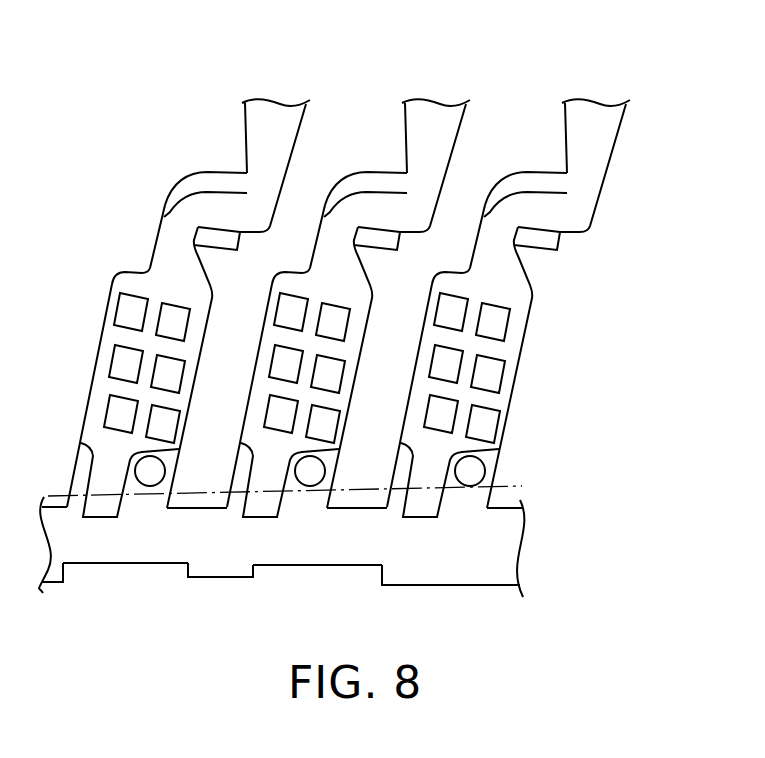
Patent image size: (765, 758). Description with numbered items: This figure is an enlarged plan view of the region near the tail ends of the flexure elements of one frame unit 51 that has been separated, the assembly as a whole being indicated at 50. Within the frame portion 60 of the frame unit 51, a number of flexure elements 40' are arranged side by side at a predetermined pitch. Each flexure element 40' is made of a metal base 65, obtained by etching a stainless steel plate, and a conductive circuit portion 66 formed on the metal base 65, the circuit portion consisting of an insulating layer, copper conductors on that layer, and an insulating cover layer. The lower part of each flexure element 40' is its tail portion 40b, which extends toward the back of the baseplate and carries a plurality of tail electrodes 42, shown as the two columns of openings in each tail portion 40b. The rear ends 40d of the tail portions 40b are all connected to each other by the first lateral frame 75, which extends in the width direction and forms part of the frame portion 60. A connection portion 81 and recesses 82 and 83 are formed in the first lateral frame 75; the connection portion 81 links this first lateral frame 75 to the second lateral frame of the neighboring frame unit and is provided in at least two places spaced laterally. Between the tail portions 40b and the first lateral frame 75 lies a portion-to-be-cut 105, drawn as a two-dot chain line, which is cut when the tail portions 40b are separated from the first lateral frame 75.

The connector assembly 50 is at (360, 96).
The frame unit 51 is at (636, 206).
The flexure element 40' is at (460, 165).
The metal base 65 is at (203, 176).
The conductive circuit portion 66 is at (162, 231).
The tail portion 40b is at (208, 268).
The tail electrodes 42 is at (178, 325).
The rear ends 40d is at (143, 508).
The frame portion 60 is at (332, 564).
The recess 83 is at (113, 563).
The connection portion 81 is at (220, 570).
The recess 82 is at (323, 565).
The first lateral frame 75 is at (467, 573).
The portion-to-be-cut 105 is at (482, 494).